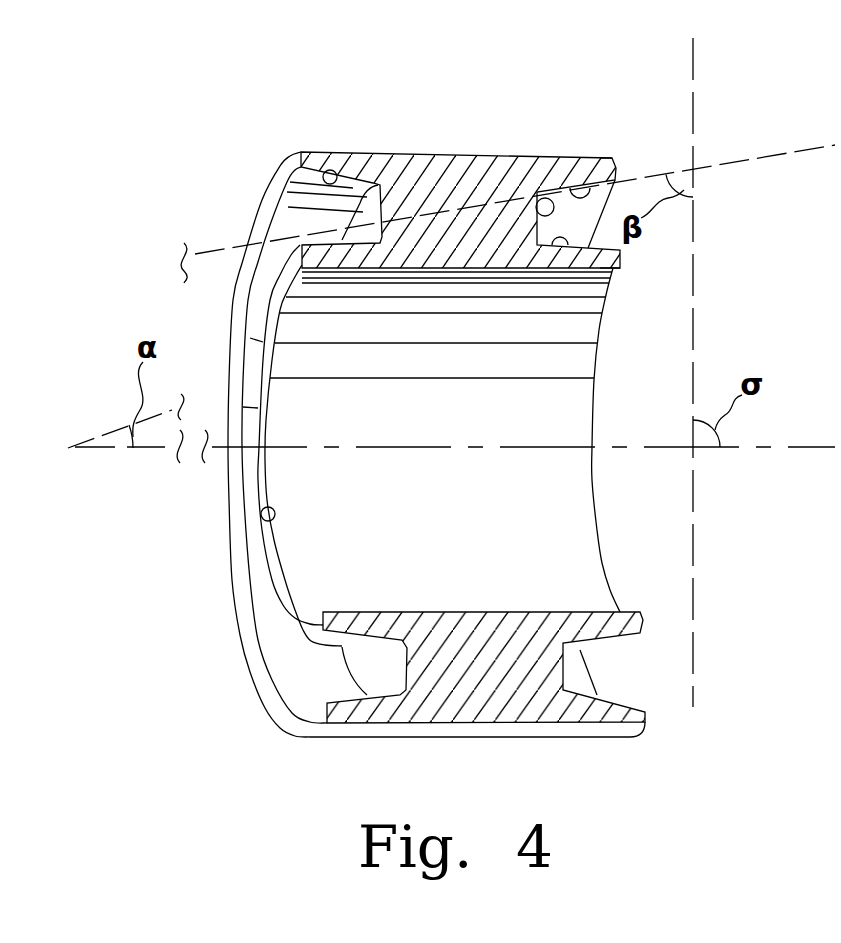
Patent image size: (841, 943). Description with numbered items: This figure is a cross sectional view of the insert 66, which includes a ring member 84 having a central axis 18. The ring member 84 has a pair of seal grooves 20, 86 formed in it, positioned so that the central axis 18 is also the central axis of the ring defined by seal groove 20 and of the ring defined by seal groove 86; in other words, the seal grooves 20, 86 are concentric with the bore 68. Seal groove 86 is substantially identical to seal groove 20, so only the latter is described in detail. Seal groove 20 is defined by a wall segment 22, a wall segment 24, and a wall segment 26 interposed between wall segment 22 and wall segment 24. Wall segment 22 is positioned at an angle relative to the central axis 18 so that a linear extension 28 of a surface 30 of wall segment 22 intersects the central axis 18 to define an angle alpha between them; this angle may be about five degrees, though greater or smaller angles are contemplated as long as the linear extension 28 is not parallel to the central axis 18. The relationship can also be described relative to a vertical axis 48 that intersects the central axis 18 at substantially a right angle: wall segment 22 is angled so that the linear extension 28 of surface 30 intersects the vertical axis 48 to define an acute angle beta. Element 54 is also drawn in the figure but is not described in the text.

The insert 66 is at (226, 135).
The ring member 84 is at (452, 160).
The seal groove 86 is at (330, 170).
The wall segment 26 is at (543, 198).
The seal groove 20 is at (570, 183).
The wall segment 22 is at (613, 163).
The surface 30 is at (597, 213).
The wall segment 24 is at (620, 264).
The ball 54 is at (560, 248).
The bore 68 is at (261, 516).
The vertical axis 48 is at (697, 80).
The linear extension 28 is at (777, 150).
The central axis 18 is at (108, 448).